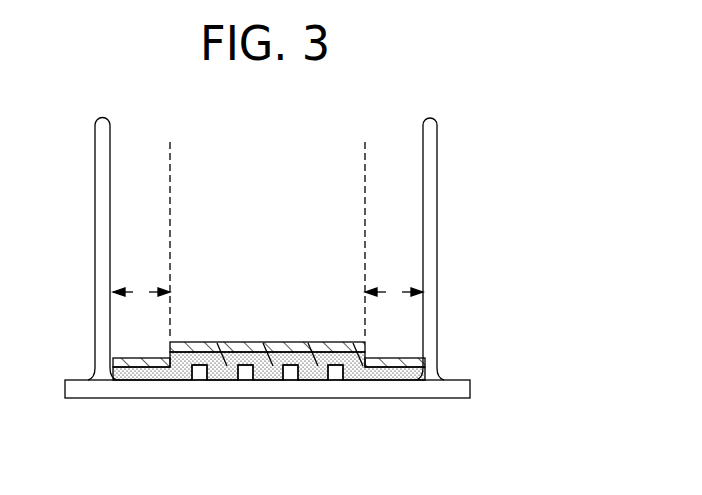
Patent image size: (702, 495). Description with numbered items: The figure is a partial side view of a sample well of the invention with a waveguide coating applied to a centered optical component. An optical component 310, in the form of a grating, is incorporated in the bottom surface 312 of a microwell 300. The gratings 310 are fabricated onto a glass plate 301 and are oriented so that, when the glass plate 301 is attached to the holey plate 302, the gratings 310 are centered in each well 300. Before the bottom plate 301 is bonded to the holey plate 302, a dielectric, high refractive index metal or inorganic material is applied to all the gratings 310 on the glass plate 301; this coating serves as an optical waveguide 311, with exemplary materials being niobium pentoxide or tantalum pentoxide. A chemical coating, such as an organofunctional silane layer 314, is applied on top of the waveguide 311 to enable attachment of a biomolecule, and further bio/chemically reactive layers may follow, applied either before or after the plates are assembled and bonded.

The microwell 300 is at (500, 245).
The glass plate 301 is at (383, 388).
The holey plate 302 is at (438, 165).
The optical component 310 is at (291, 372).
The optical waveguide 311 is at (368, 358).
The bottom surface 312 is at (228, 340).
The organofunctional silane layer 314 is at (311, 355).